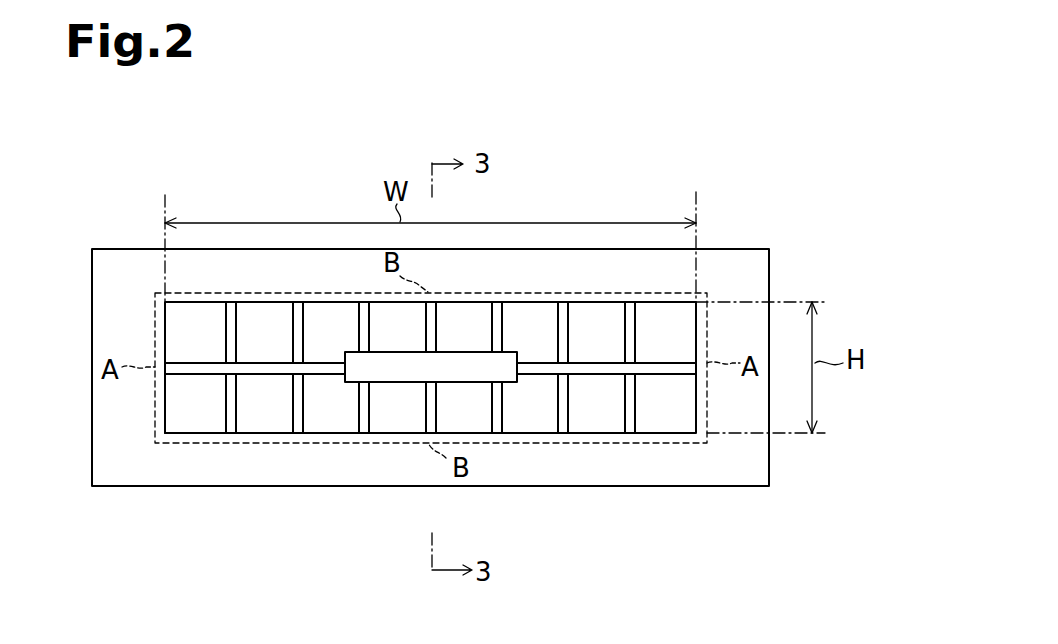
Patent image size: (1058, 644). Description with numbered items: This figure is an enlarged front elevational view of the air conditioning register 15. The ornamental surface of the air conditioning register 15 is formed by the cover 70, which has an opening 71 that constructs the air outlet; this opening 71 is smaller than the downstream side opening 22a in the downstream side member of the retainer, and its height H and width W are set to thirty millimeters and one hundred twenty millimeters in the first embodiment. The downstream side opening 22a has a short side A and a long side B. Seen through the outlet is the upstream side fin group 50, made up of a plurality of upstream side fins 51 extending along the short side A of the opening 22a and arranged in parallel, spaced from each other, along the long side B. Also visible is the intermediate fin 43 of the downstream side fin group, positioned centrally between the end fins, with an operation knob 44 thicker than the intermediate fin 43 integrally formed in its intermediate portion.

The air conditioning register 15 is at (760, 396).
The downstream side opening 22a is at (312, 436).
The intermediate fin 43 is at (665, 368).
The operation knob 44 is at (463, 370).
The upstream side fin group 50 is at (254, 470).
The upstream side fins 51 is at (296, 316).
The cover 70 is at (715, 474).
The opening 71 is at (177, 431).